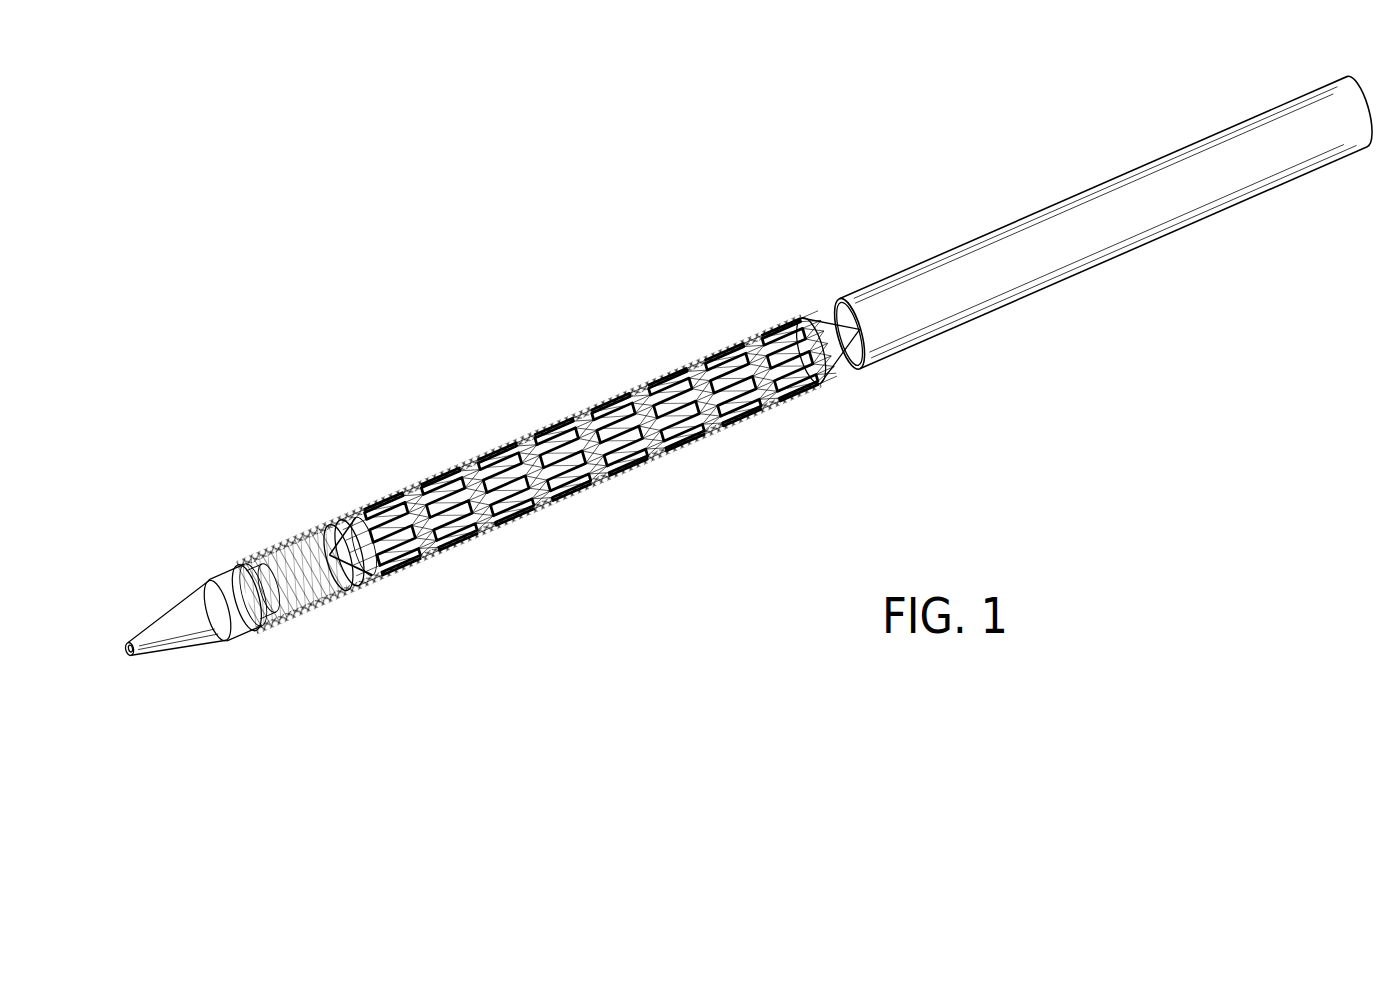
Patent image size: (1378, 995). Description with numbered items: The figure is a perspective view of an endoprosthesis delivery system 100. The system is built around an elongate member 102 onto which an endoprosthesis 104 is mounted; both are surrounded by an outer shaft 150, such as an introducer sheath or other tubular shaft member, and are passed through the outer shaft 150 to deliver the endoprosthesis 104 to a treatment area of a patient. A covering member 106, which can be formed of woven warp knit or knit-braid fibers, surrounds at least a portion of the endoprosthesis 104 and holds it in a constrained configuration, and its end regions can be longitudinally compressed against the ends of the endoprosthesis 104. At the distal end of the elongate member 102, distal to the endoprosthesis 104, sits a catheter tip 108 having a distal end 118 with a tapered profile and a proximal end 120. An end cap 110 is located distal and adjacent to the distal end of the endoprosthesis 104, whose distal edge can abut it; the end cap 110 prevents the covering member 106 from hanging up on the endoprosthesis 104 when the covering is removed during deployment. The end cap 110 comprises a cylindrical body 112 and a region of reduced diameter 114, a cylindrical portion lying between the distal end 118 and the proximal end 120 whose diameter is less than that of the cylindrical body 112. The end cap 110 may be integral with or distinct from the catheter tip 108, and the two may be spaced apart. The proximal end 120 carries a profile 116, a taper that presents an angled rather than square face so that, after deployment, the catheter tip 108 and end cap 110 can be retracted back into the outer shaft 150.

The endoprosthesis delivery system 100 is at (812, 165).
The elongate member 102 is at (127, 655).
The endoprosthesis 104 is at (514, 518).
The covering member 106 is at (512, 447).
The catheter tip 108 is at (165, 607).
The end cap 110 is at (257, 557).
The cylindrical body 112 is at (213, 585).
The region of reduced diameter 114 is at (258, 618).
The profile 116 is at (330, 541).
The distal end 118 is at (131, 662).
The proximal end 120 is at (342, 583).
The outer shaft 150 is at (953, 252).